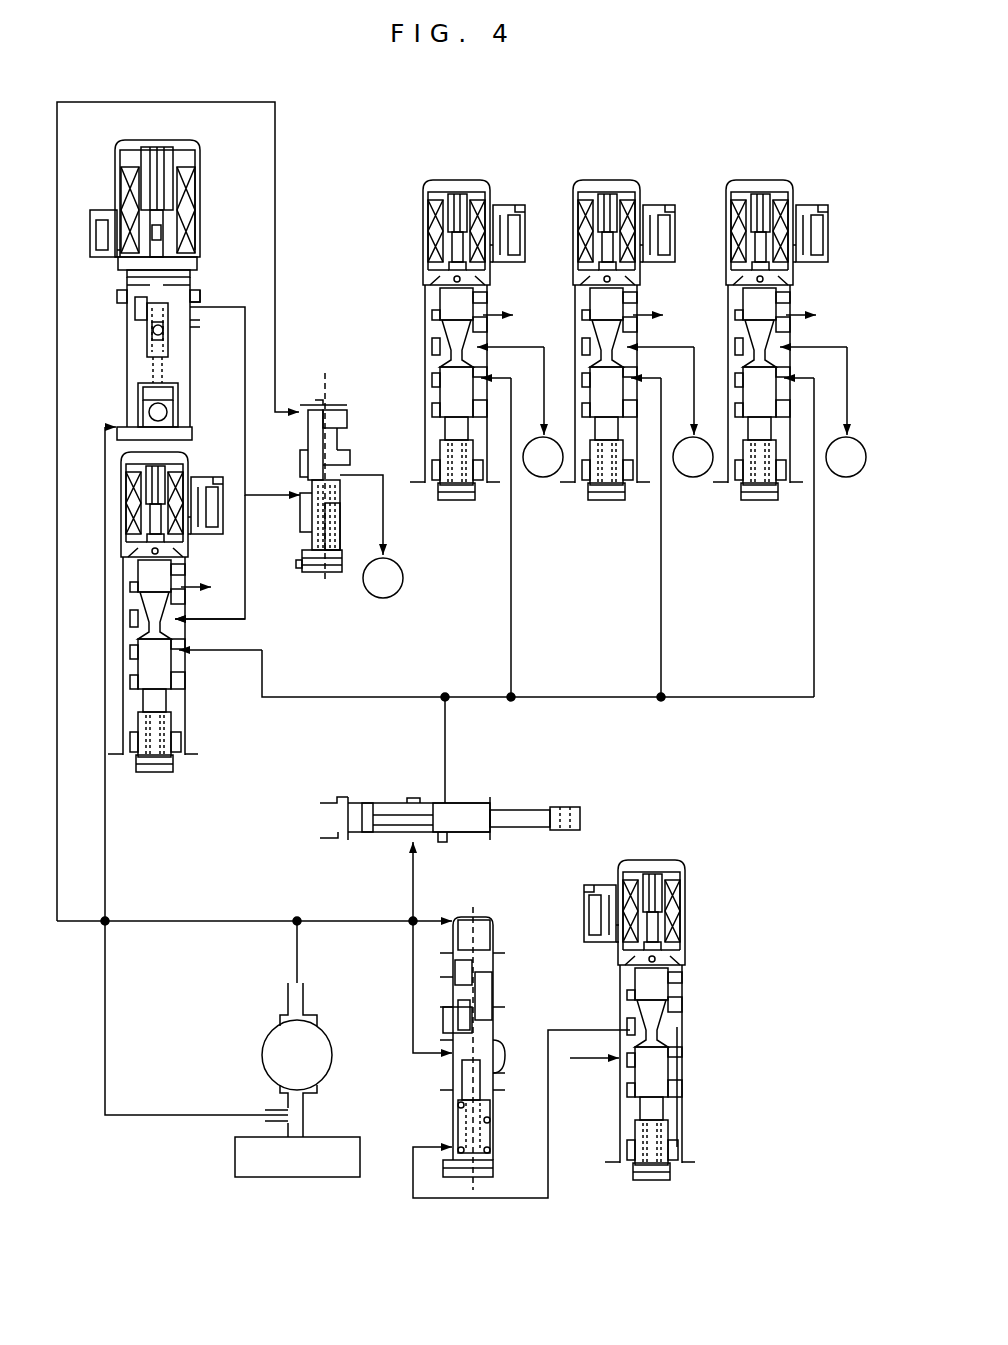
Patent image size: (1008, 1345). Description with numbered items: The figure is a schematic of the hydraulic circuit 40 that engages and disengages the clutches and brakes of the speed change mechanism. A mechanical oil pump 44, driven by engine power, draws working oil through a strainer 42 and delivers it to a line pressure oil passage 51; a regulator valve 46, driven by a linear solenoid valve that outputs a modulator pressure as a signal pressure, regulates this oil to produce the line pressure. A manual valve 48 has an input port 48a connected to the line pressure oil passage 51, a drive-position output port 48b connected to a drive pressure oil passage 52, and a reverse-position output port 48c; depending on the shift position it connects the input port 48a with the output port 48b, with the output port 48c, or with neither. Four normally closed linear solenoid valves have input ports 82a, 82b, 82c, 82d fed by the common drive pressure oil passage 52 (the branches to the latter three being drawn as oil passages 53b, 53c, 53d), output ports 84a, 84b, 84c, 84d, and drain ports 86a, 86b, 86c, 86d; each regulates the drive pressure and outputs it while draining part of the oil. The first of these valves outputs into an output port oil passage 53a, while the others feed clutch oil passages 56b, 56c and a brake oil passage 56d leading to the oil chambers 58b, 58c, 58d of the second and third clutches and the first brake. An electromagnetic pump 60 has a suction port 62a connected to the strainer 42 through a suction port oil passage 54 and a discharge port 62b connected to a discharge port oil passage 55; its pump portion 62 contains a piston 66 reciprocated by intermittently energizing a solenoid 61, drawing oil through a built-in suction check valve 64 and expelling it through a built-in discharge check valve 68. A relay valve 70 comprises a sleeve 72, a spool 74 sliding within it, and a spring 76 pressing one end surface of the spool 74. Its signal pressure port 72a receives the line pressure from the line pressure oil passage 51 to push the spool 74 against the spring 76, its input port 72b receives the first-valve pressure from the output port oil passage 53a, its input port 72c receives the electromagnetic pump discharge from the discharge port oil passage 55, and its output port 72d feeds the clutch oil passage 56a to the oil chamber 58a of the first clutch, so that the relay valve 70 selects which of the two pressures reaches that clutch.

The hydraulic circuit 40 is at (744, 94).
The strainer 42 is at (340, 1137).
The mechanical oil pump 44 is at (335, 1020).
The regulator valve 46 is at (506, 914).
The manual valve 48 is at (324, 792).
The input port 48a is at (410, 845).
The D-position output port 48b is at (447, 797).
The R-position output port 48c is at (336, 842).
The line pressure oil passage 51 is at (270, 920).
The drive pressure oil passage 52 is at (390, 697).
The output port oil passage 53a is at (247, 598).
The oil passage 53b is at (512, 600).
The oil passage 53c is at (662, 600).
The oil passage 53d is at (815, 597).
The suction port oil passage 54 is at (177, 1115).
The discharge port oil passage 55 is at (229, 306).
The clutch oil passage 56a is at (386, 512).
The clutch oil passage 56b is at (546, 346).
The clutch oil passage 56c is at (696, 346).
The brake oil passage 56d is at (849, 346).
The oil chamber of clutch C1 58a is at (403, 580).
The oil chamber of clutch C2 58b is at (543, 477).
The oil chamber of clutch C3 58c is at (693, 477).
The oil chamber of brake B1 58d is at (846, 477).
The electromagnetic pump 60 is at (214, 170).
The solenoid 61 is at (197, 227).
The valve portion 62 is at (161, 337).
The suction port 62a is at (118, 418).
The discharge port 62b is at (197, 290).
The suction check valve 64 is at (165, 410).
The piston 66 is at (147, 329).
The discharge check valve 68 is at (162, 337).
The C1 relay valve 70 is at (339, 394).
The sleeve 72 is at (317, 405).
The signal pressure port 72a is at (303, 414).
The input port 72b is at (307, 498).
The input port 72c is at (301, 453).
The output port 72d is at (347, 465).
The spool 74 is at (330, 428).
The spring 76 is at (333, 523).
The input port 82a is at (180, 648).
The input port 82b is at (486, 382).
The input port 82c is at (637, 382).
The input port 82d is at (790, 382).
The output port 84a is at (178, 619).
The output port 84b is at (483, 343).
The output port 84c is at (633, 343).
The output port 84d is at (786, 343).
The drain port 86a is at (184, 572).
The drain port 86b is at (482, 304).
The drain port 86c is at (632, 304).
The drain port 86d is at (785, 304).